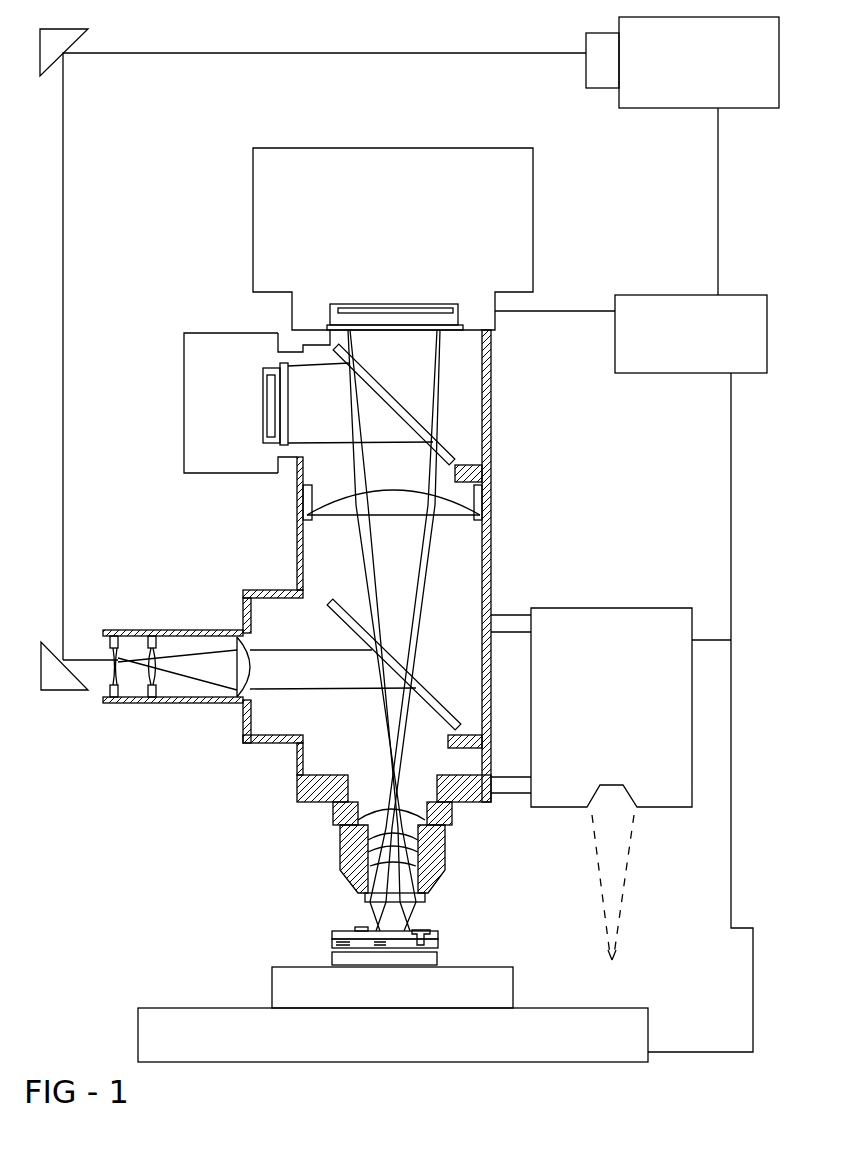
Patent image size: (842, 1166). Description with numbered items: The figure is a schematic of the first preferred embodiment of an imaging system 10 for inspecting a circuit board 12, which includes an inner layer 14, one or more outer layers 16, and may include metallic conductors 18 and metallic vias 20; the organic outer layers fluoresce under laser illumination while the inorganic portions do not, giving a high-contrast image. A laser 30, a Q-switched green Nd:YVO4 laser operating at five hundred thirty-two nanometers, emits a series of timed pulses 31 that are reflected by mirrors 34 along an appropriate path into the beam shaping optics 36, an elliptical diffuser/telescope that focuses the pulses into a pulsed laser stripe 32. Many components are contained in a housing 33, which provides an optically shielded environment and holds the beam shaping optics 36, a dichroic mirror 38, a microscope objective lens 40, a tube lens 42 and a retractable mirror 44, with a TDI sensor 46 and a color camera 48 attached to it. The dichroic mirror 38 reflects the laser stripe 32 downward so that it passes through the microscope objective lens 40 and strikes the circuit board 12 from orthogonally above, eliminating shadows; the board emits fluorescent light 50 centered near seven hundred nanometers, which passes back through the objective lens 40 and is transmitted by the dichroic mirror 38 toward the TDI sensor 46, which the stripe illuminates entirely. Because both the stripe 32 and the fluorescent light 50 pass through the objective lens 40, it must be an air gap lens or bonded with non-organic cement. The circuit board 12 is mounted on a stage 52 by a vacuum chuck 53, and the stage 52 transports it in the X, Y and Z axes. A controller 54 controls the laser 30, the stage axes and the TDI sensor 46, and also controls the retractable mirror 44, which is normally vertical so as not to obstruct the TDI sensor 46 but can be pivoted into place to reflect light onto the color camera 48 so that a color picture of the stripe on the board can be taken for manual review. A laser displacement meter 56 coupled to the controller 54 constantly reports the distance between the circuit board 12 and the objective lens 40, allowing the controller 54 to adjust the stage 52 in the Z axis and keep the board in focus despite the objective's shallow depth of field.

The imaging system 10 is at (140, 800).
The circuit board 12 is at (447, 943).
The inner layer 14 is at (438, 936).
The outer layer 16 is at (440, 935).
The metallic conductors 18 is at (332, 960).
The metallic vias 20 is at (332, 937).
The laser 30 is at (683, 108).
The pulses 31 is at (313, 55).
The pulsed laser stripe 32 is at (328, 688).
The housing 33 is at (297, 553).
The mirrors 34 is at (66, 45).
The beam shaping optics 36 is at (183, 684).
The dichroic mirror 38 is at (404, 673).
The microscope objective lens 40 is at (323, 834).
The tube lens 42 is at (327, 511).
The retractable mirror 44 is at (464, 413).
The TDI sensor 46 is at (393, 239).
The color camera 48 is at (308, 403).
The fluorescent light 50 is at (426, 572).
The stage 52 is at (633, 1032).
The vacuum chuck 53 is at (497, 992).
The controller 54 is at (631, 580).
The laser displacement meter 56 is at (611, 784).